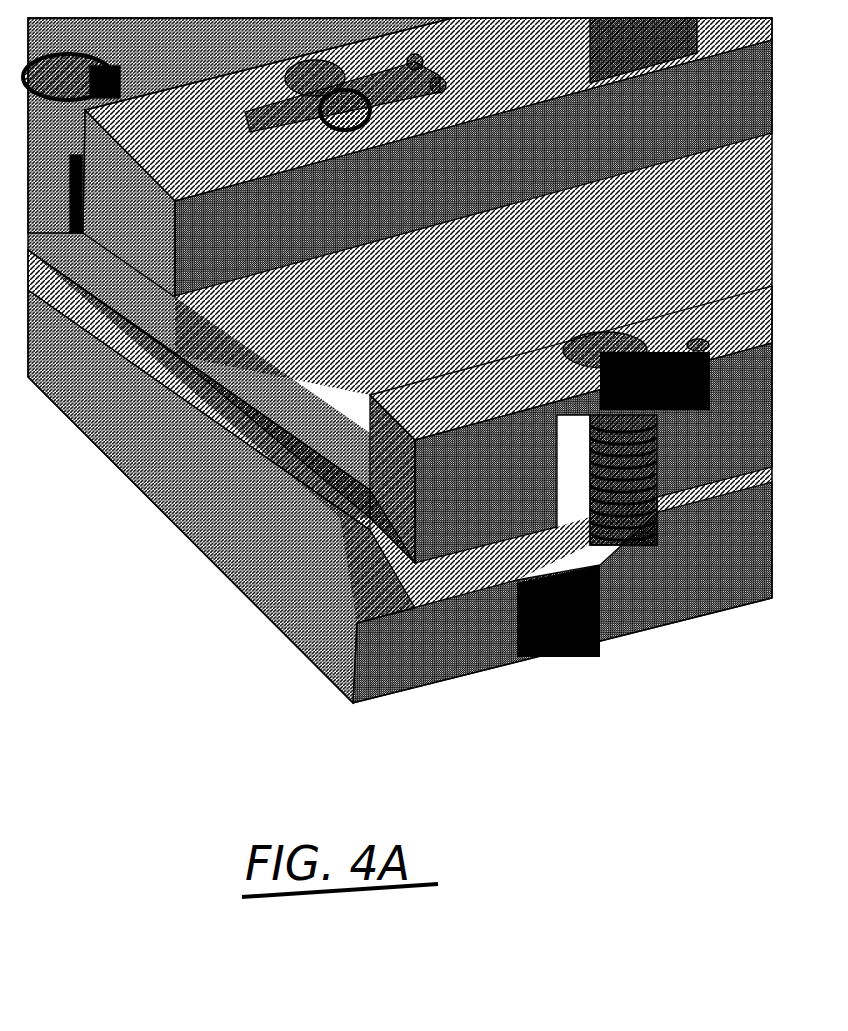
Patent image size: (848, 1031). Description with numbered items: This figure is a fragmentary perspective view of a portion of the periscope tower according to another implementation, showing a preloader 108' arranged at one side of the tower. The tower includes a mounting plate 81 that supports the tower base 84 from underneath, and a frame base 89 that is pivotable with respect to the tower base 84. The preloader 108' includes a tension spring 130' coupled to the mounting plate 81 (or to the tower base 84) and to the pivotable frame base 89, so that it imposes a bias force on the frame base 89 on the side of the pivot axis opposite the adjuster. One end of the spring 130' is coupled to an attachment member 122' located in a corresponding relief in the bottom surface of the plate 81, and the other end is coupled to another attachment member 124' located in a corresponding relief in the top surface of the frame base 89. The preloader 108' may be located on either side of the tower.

The mounting plate 81 is at (286, 659).
The tower base 84 is at (310, 513).
The frame base 89 is at (272, 422).
The preloader 108' is at (571, 545).
The attachment member 122' is at (615, 637).
The attachment member 124' is at (407, 223).
The tension spring 130' is at (531, 607).